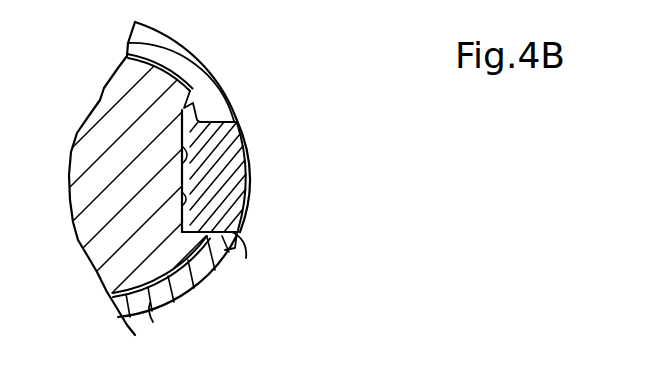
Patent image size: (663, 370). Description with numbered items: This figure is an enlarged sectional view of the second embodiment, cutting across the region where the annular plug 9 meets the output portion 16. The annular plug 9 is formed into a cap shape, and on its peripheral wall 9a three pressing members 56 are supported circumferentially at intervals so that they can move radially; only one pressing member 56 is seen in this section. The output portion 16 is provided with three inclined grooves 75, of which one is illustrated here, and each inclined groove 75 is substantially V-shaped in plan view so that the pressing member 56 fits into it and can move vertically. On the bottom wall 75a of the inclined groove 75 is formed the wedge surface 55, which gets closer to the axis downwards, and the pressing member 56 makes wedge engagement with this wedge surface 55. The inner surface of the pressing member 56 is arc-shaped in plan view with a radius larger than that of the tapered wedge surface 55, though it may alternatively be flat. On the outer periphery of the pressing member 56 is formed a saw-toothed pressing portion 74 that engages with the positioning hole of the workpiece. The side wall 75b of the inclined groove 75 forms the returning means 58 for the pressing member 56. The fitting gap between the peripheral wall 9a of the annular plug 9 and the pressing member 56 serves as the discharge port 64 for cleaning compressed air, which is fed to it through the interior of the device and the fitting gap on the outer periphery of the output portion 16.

The annular plug 9 is at (230, 84).
The peripheral wall 9a is at (153, 322).
The output portion 16 is at (118, 84).
The wedge surface 55 is at (88, 259).
The pressing member 56 is at (253, 197).
The returning means 58 is at (204, 260).
The discharge port 64 is at (227, 243).
The saw-toothed pressing portion 74 is at (247, 145).
The inclined groove 75 is at (189, 157).
The bottom wall 75a is at (168, 188).
The side wall 75b is at (189, 92).